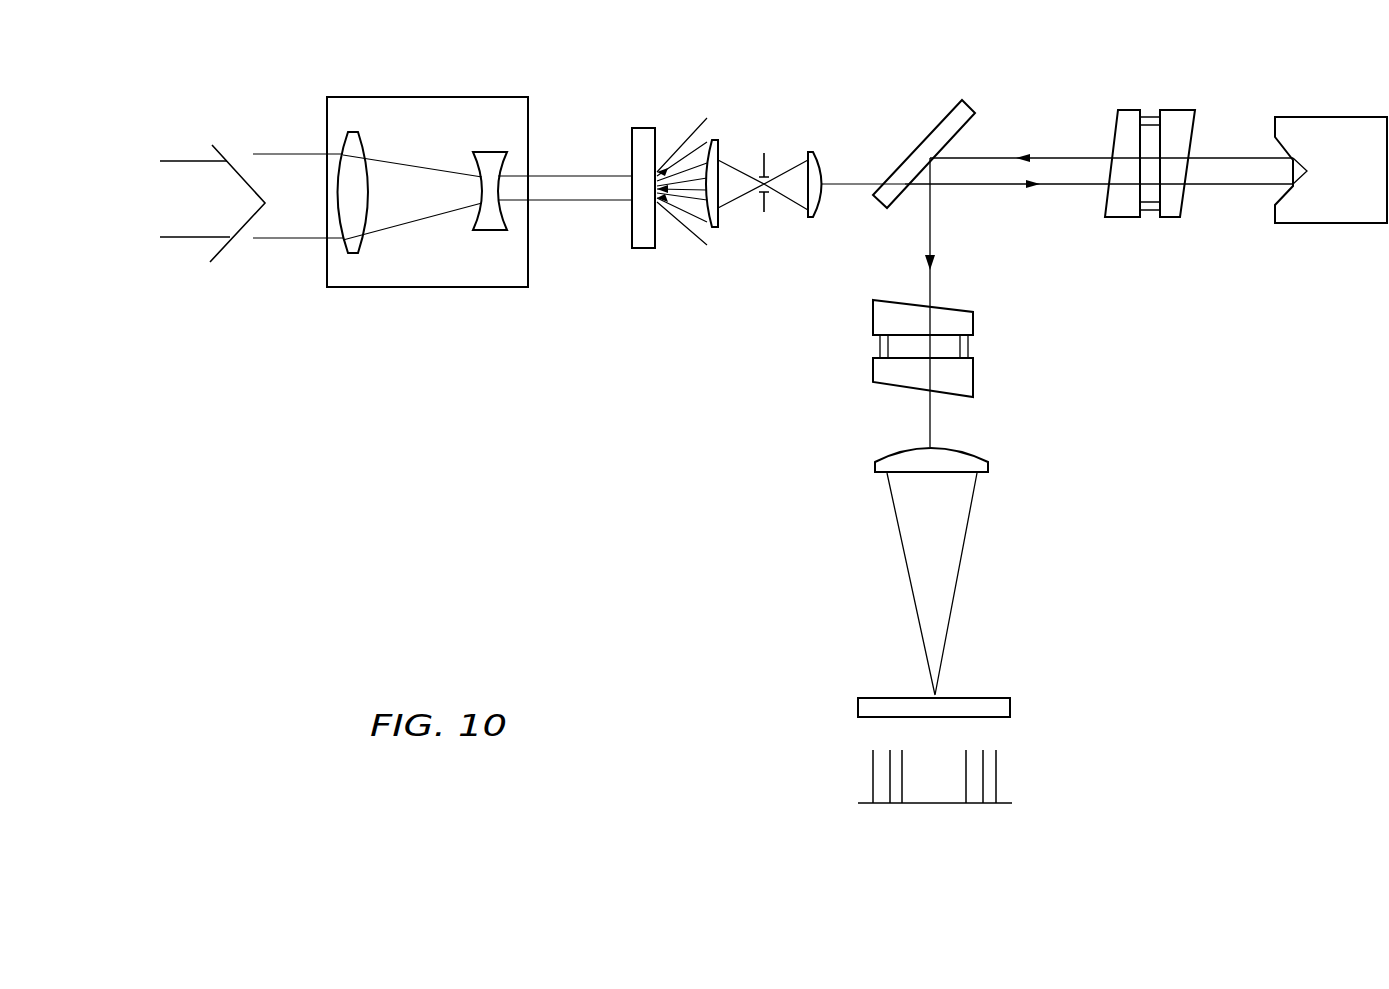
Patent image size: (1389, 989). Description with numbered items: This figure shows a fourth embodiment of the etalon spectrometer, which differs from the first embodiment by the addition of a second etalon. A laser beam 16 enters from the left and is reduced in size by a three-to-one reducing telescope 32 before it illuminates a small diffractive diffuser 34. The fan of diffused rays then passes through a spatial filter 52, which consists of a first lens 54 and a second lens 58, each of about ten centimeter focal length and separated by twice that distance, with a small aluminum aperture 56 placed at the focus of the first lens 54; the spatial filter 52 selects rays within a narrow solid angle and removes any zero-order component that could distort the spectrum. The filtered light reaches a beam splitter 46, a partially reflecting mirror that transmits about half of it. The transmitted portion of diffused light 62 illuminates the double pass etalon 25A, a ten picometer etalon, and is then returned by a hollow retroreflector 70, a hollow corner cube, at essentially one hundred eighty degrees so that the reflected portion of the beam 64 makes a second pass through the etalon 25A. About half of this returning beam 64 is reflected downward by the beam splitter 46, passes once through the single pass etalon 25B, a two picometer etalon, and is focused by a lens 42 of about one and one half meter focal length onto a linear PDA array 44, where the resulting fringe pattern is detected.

The laser beam 16 is at (194, 257).
The telescope 32 is at (425, 287).
The diffuser 34 is at (640, 250).
The spatial filter 52 is at (780, 80).
The lens 54 is at (712, 138).
The aluminum aperture 56 is at (766, 172).
The lens 58 is at (810, 150).
The beam splitter 46 is at (937, 122).
The portion of diffused light 62 is at (983, 188).
The reflected portion of the beam 64 is at (1053, 158).
The double pass etalon 25A is at (1180, 110).
The hollow retroreflector 70 is at (1335, 225).
The single pass etalon 25B is at (975, 368).
The lens 42 is at (990, 462).
The linear PDA array 44 is at (1012, 700).